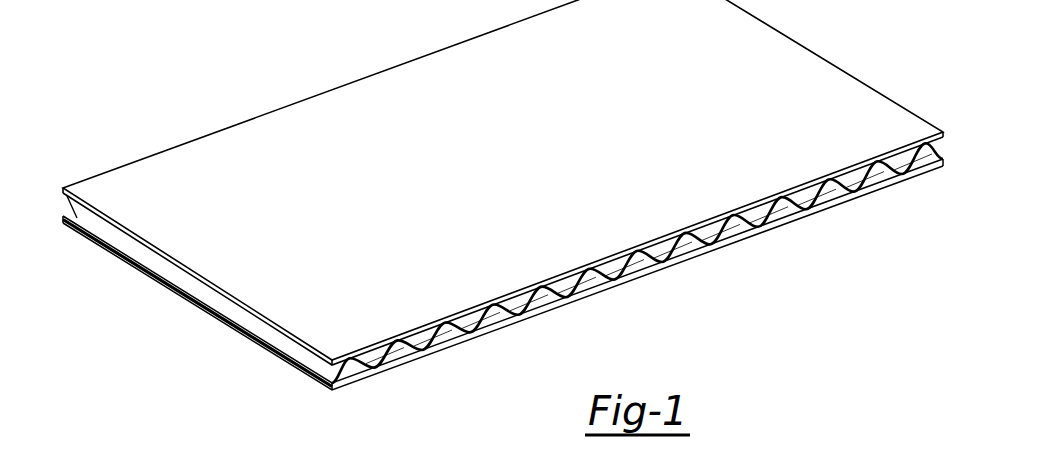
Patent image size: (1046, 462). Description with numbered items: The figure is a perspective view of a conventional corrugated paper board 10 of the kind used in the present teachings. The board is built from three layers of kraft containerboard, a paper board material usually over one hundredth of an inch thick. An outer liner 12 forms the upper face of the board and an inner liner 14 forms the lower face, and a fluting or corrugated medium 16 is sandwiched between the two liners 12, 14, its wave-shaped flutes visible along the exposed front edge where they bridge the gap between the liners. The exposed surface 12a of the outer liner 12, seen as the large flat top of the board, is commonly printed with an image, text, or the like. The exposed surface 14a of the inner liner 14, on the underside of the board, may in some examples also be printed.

The corrugated paper board 10 is at (162, 110).
The outer liner 12 is at (497, 182).
The exposed surface of the outer liner 12a is at (169, 235).
The inner liner 14 is at (251, 339).
The exposed surface of the inner liner 14a is at (860, 199).
The corrugated medium 16 is at (558, 293).